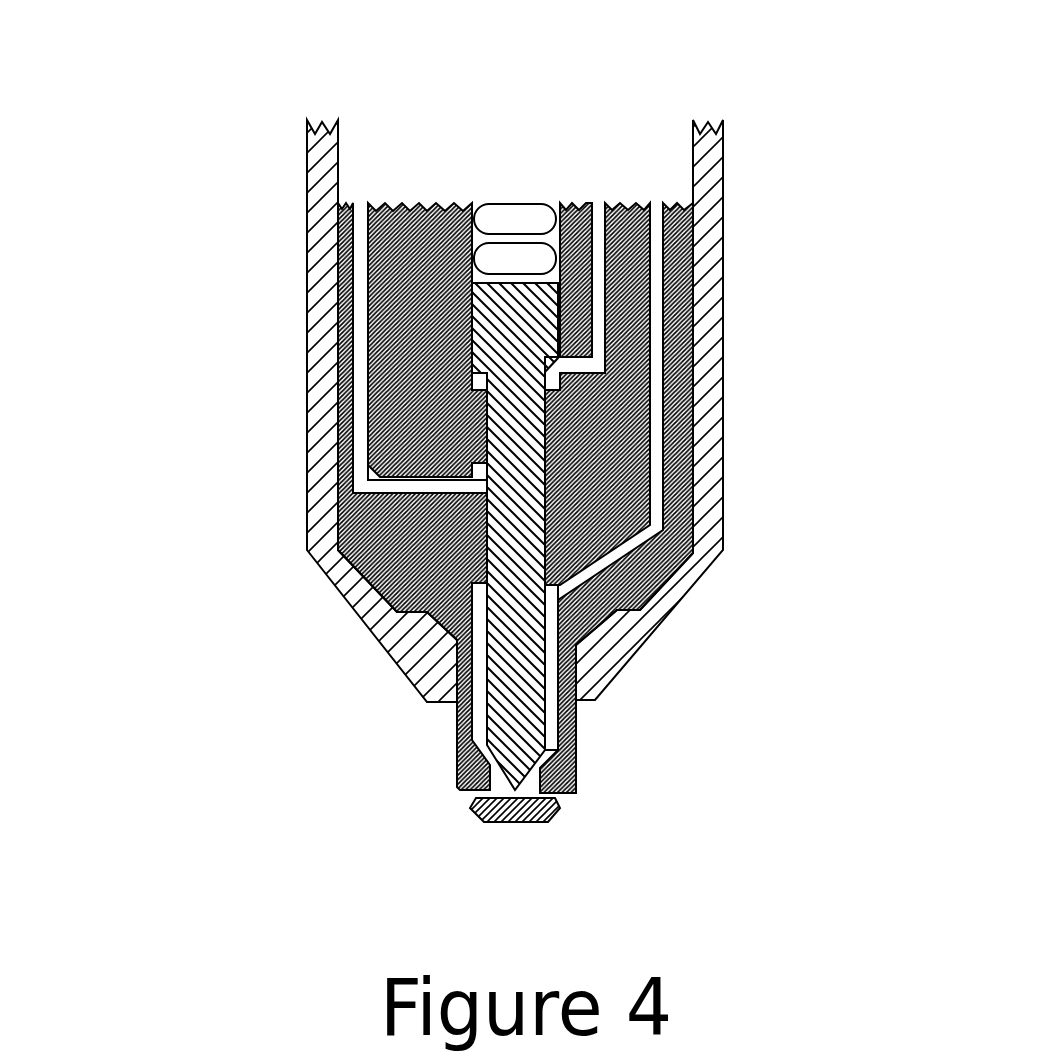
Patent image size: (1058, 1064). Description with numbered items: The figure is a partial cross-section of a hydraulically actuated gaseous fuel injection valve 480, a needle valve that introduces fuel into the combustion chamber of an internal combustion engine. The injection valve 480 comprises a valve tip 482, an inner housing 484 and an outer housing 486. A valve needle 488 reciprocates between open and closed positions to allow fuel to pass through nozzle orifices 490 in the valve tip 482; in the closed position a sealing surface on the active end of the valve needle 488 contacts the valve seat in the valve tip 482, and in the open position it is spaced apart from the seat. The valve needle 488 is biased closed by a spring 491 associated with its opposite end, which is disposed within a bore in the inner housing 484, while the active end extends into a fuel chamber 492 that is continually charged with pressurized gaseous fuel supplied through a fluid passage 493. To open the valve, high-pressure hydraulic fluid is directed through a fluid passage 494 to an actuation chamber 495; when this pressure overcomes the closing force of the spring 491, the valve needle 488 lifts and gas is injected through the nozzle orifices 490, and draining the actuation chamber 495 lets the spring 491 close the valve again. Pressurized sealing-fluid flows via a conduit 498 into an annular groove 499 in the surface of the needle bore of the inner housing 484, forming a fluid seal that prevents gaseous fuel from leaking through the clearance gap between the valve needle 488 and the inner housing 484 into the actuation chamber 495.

The injection valve 480 is at (499, 412).
The valve tip 482 is at (400, 758).
The inner housing 484 is at (490, 207).
The outer housing 486 is at (705, 238).
The valve needle 488 is at (520, 342).
The nozzle orifices 490 is at (577, 790).
The spring 491 is at (508, 258).
The fuel chamber 492 is at (553, 725).
The fluid passage 493 is at (655, 478).
The fluid passage 494 is at (597, 357).
The actuation chamber 495 is at (474, 380).
The conduit 498 is at (358, 397).
The annular groove 499 is at (470, 477).